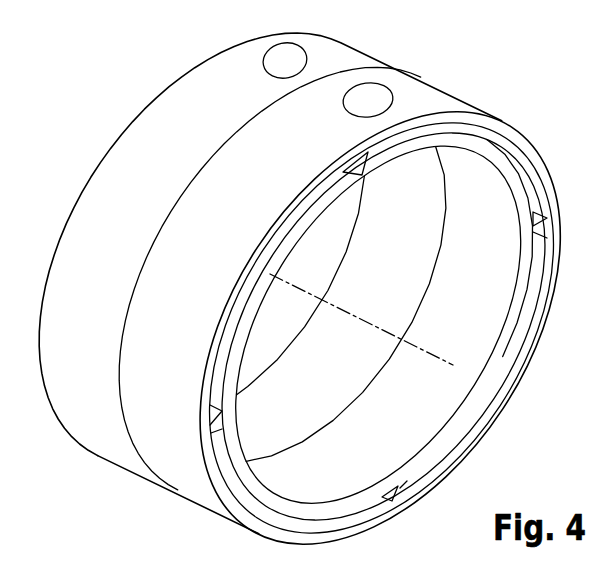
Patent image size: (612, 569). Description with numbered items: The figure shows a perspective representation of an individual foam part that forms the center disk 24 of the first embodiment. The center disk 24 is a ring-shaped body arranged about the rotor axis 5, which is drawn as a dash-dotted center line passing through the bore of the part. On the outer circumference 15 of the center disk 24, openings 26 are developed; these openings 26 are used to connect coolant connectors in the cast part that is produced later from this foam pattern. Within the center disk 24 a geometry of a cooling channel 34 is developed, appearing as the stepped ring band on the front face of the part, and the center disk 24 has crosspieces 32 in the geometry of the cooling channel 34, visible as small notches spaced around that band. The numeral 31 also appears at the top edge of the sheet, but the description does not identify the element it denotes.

The rotor axis 5 is at (447, 362).
The outer circumference 15 is at (153, 150).
The center disk 24 is at (447, 62).
The openings 26 is at (371, 93).
The bearing component 31 is at (270, 245).
The crosspieces 32 is at (214, 428).
The cooling channel 34 is at (343, 518).